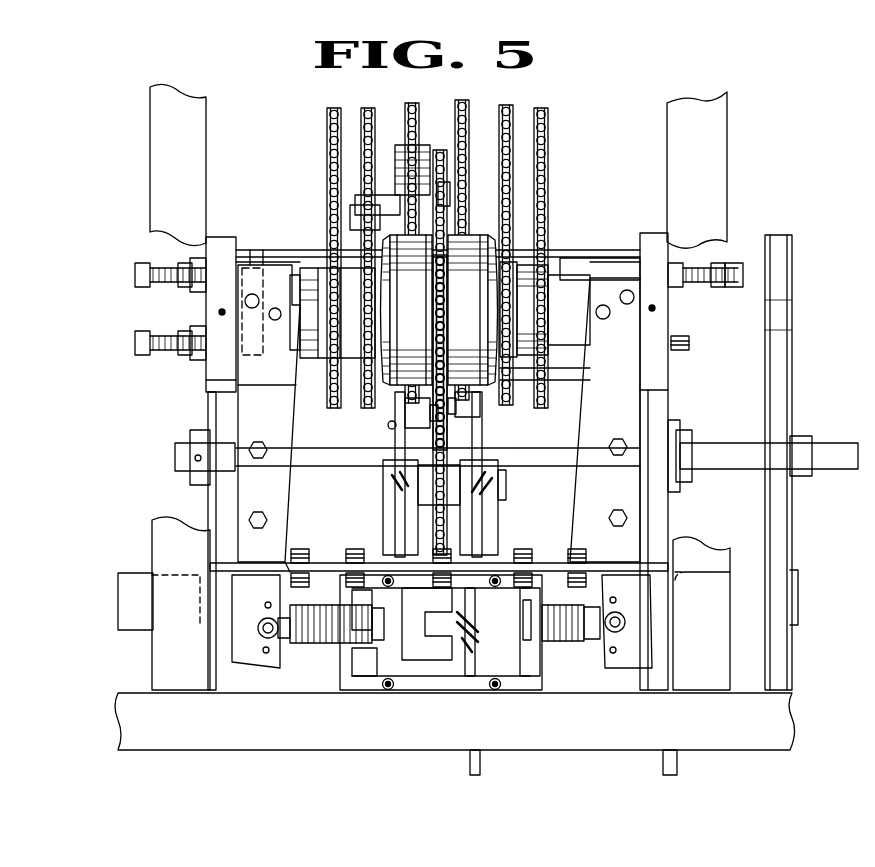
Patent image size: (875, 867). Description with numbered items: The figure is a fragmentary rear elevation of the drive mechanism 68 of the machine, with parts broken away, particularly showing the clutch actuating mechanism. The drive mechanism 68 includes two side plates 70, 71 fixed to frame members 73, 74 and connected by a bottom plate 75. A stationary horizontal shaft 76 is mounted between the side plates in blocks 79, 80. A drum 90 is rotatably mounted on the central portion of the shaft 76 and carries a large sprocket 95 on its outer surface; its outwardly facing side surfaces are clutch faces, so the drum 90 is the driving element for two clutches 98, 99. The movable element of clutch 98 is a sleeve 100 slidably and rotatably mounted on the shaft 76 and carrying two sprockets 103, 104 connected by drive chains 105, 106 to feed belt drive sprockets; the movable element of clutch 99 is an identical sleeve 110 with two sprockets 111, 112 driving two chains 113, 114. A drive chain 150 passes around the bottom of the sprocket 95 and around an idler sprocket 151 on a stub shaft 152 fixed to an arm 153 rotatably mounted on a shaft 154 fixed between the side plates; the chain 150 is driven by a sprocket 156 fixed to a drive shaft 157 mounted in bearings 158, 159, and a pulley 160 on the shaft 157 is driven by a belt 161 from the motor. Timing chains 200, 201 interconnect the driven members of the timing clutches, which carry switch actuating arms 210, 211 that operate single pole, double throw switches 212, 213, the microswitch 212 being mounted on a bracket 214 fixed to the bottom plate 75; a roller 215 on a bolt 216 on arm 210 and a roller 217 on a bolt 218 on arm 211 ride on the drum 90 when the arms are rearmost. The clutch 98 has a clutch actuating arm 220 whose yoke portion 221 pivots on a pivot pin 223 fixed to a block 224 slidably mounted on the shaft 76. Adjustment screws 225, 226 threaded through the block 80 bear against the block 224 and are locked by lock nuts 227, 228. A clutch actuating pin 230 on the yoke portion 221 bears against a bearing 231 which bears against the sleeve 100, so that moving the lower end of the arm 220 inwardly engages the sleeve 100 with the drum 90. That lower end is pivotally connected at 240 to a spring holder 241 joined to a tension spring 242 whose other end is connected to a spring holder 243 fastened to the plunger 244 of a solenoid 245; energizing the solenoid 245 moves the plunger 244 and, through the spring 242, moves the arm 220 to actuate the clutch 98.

The drive mechanism 68 is at (606, 212).
The side plate 70 is at (668, 388).
The side plate 71 is at (210, 400).
The frame member 73 is at (716, 166).
The frame member 74 is at (188, 176).
The bottom plate 75 is at (290, 571).
The shaft 76 is at (245, 300).
The block 79 is at (651, 240).
The block 80 is at (218, 381).
The drum 90 is at (482, 294).
The large sprocket 95 is at (436, 305).
The clutch 98 is at (356, 242).
The clutch 99 is at (525, 242).
The sleeve 100 is at (292, 352).
The sprocket 103 is at (384, 304).
The sprocket 104 is at (330, 342).
The drive chain 105 is at (366, 108).
The drive chain 106 is at (327, 122).
The sleeve 110 is at (565, 322).
The sprocket 111 is at (498, 302).
The sprocket 112 is at (580, 345).
The chain 113 is at (512, 110).
The chain 114 is at (546, 140).
The drive chain 150 is at (428, 506).
The idler sprocket 151 is at (428, 165).
The stub shaft 152 is at (455, 200).
The arm 153 is at (370, 205).
The shaft 154 is at (565, 368).
The sprocket 156 is at (448, 440).
The drive shaft 157 is at (818, 444).
The bearing 158 is at (680, 422).
The bearing 159 is at (190, 435).
The pulley 160 is at (792, 350).
The belt 161 is at (780, 372).
The timing chain 200 is at (414, 104).
The timing chain 201 is at (466, 103).
The switch actuating arm 210 is at (394, 412).
The switch actuating arm 211 is at (483, 410).
The microswitch 212 is at (383, 495).
The switch 213 is at (498, 505).
The bracket 214 is at (505, 520).
The roller 215 is at (405, 432).
The bolt 216 is at (387, 426).
The roller 217 is at (470, 418).
The bolt 218 is at (480, 404).
The clutch actuating arm 220 is at (273, 510).
The yoke portion 221 is at (252, 265).
The pivot pin 223 is at (270, 316).
The block 224 is at (264, 265).
The adjustment screw 225 is at (135, 276).
The adjustment screw 226 is at (135, 344).
The lock nut 227 is at (198, 266).
The lock nut 228 is at (200, 356).
The clutch actuating pin 230 is at (350, 215).
The bearing 231 is at (303, 272).
The pivotal connection 240 is at (270, 640).
The spring holder 241 is at (272, 622).
The tension spring 242 is at (330, 648).
The spring holder 243 is at (372, 676).
The plunger 244 is at (445, 634).
The solenoid 245 is at (392, 600).